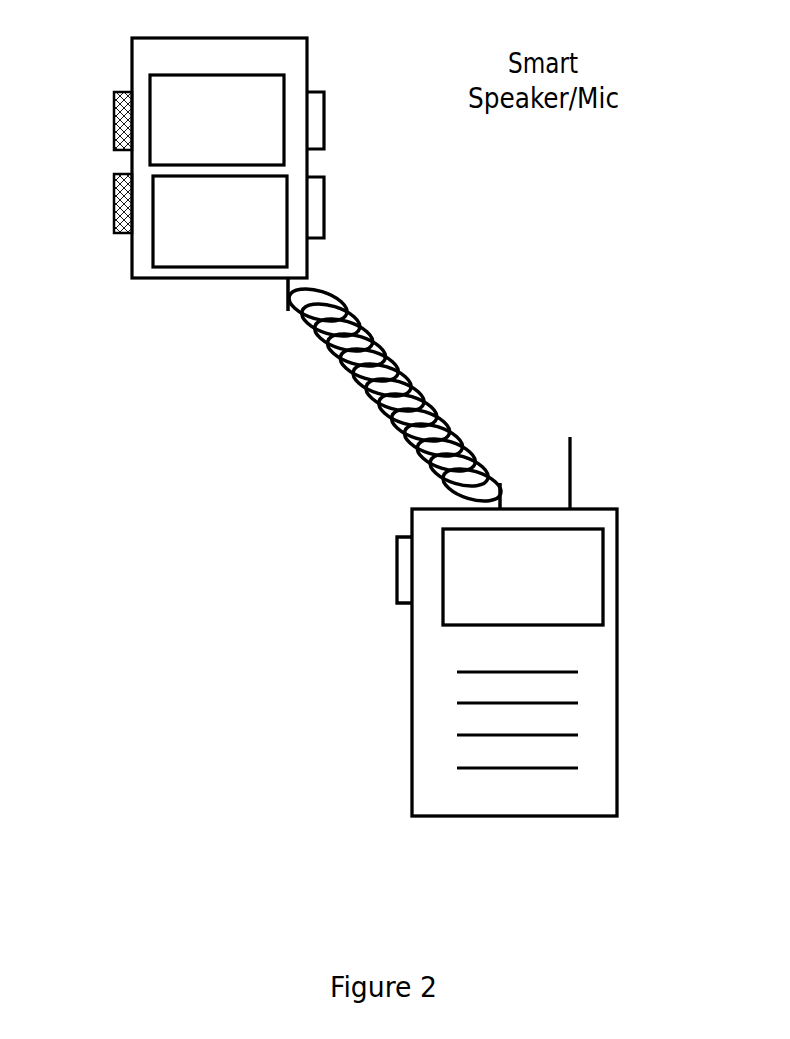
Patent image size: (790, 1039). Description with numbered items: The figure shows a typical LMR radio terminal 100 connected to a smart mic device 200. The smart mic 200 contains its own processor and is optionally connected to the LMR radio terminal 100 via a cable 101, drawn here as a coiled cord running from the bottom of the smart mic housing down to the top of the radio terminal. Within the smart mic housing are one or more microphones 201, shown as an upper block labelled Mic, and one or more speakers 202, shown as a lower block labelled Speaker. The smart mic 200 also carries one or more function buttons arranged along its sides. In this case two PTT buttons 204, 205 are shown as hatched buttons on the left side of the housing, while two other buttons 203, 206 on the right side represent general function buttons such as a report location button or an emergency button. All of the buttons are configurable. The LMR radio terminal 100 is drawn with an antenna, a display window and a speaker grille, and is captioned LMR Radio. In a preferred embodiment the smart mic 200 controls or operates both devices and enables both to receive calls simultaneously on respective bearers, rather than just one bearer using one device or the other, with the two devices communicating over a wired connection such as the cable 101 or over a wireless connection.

The LMR radio terminal 100 is at (545, 647).
The cable 101 is at (395, 393).
The smart mic device 200 is at (219, 139).
The microphone 201 is at (217, 120).
The speaker 202 is at (220, 221).
The function button 203 is at (343, 120).
The PTT button 204 is at (92, 121).
The PTT button 205 is at (92, 203).
The function button 206 is at (346, 207).